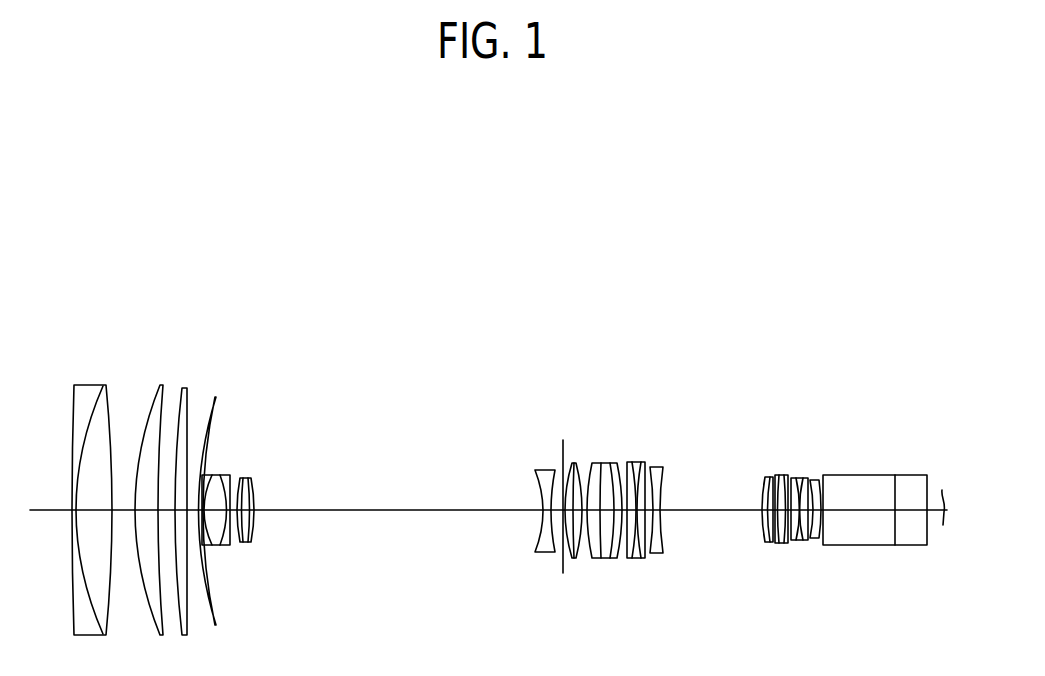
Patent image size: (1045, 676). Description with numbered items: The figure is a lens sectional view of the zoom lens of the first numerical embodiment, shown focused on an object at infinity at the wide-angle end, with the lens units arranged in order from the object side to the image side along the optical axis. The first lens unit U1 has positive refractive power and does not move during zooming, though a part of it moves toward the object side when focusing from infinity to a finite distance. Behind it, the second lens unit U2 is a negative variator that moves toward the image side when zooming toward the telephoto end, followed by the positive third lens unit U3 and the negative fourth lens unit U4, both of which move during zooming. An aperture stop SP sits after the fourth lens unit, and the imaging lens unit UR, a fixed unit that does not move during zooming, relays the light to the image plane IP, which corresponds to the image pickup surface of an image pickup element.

The first lens unit U1 is at (203, 370).
The second lens unit U2 is at (207, 468).
The third lens unit U3 is at (257, 468).
The fourth lens unit U4 is at (557, 458).
The aperture stop SP is at (563, 440).
The imaging lens unit UR is at (822, 458).
The image plane IP is at (942, 490).